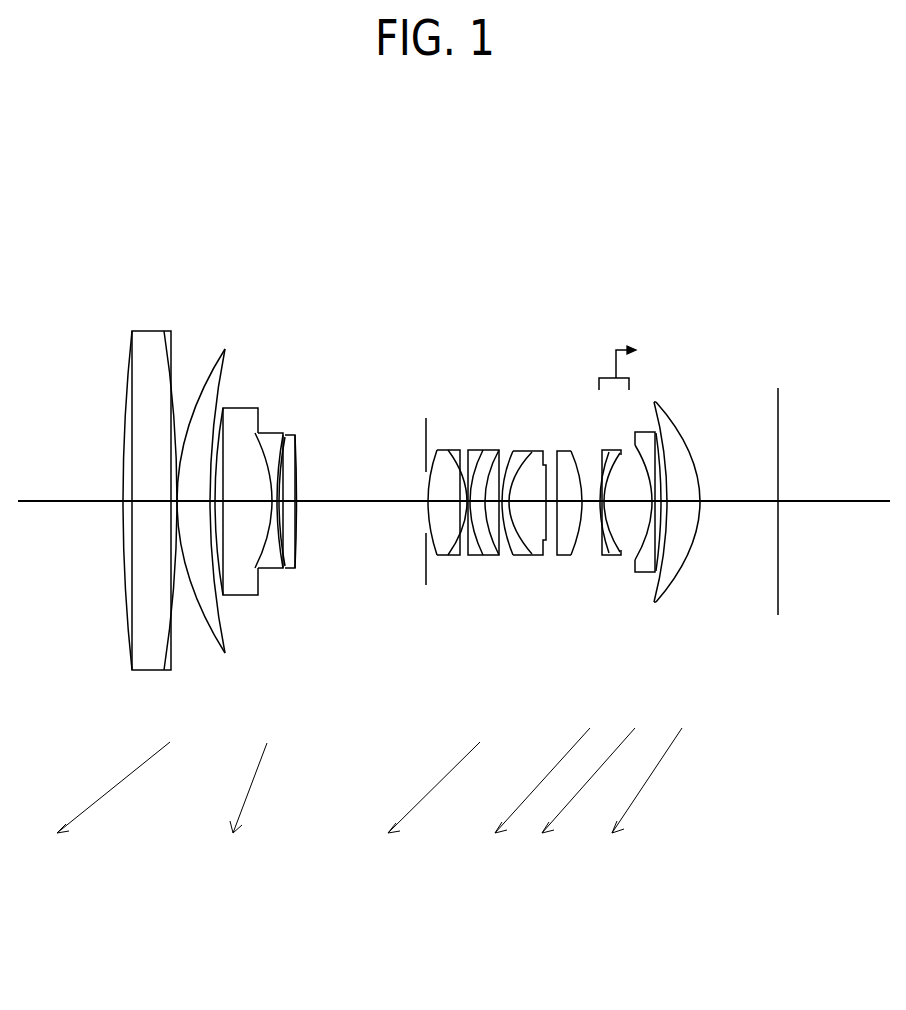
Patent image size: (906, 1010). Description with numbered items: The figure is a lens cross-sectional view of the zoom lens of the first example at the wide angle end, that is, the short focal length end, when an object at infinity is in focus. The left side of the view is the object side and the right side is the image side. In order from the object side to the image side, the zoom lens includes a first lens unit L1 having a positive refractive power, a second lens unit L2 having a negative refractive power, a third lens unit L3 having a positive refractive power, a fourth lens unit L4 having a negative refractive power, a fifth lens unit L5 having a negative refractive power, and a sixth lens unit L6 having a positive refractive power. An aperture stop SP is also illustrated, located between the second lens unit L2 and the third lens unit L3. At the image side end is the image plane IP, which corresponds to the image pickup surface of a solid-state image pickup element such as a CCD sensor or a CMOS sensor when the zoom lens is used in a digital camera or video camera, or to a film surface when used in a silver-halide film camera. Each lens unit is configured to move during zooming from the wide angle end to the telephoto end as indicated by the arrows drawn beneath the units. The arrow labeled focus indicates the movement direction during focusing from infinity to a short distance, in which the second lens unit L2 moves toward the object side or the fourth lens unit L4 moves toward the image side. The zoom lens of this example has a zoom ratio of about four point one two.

The first lens unit L1 is at (218, 668).
The second lens unit L2 is at (303, 668).
The third lens unit L3 is at (576, 667).
The fourth lens unit L4 is at (620, 667).
The fifth lens unit L5 is at (647, 667).
The sixth lens unit L6 is at (692, 667).
The aperture stop SP is at (426, 425).
The image plane IP is at (778, 408).
The focusing arrow focus is at (577, 359).